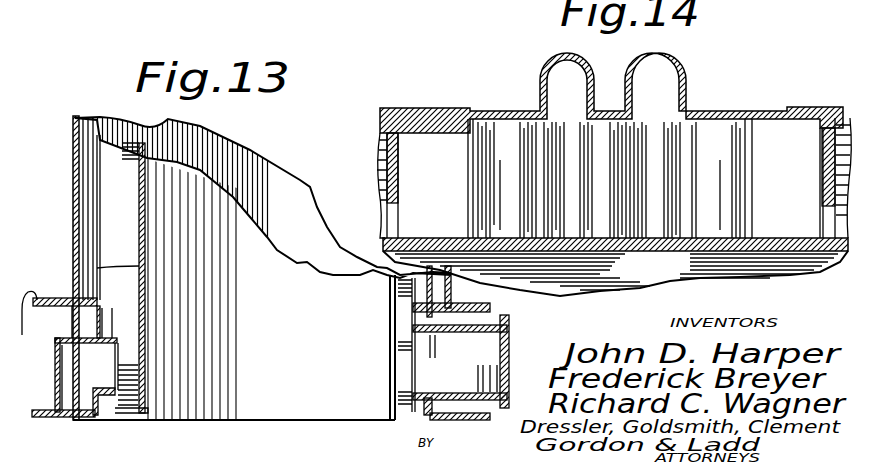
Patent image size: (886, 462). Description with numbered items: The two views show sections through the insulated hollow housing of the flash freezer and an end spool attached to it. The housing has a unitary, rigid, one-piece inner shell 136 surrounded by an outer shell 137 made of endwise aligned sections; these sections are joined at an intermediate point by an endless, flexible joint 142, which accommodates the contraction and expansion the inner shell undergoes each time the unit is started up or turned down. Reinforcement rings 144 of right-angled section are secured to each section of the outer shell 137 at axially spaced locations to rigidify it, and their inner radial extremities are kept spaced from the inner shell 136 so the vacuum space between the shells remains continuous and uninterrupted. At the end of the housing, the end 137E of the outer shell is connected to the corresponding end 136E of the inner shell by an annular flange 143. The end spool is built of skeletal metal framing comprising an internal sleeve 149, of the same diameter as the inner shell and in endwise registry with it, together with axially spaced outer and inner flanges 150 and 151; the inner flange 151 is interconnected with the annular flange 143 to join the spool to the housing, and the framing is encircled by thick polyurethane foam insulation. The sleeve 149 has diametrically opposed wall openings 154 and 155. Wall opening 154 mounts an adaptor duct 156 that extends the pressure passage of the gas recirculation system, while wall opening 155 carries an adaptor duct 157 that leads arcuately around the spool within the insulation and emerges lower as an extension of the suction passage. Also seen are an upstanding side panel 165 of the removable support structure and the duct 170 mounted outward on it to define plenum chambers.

In FIG. 14, the inner shell 136 is at (610, 256).
In FIG. 14, the outer shell 137 is at (405, 108).
In FIG. 14, the flexible joint 142 is at (580, 56).
In FIG. 14, the reinforcement rings 144 is at (405, 165).
In FIG. 13, the side panel 165 is at (140, 180).
In FIG. 13, the duct 170 is at (128, 228).
In FIG. 13, the outer shell end 137E is at (82, 283).
In FIG. 13, the inner shell end 136E is at (140, 266).
In FIG. 13, the inner flange 151 is at (60, 314).
In FIG. 13, the annular flange 143 is at (24, 325).
In FIG. 13, the adaptor duct 157 is at (70, 345).
In FIG. 13, the wall opening 155 is at (122, 350).
In FIG. 13, the outer flange 150 is at (55, 418).
In FIG. 13, the internal sleeve 149 is at (100, 398).
In FIG. 13, the wall opening 154 is at (438, 372).
In FIG. 13, the adaptor duct 156 is at (447, 332).